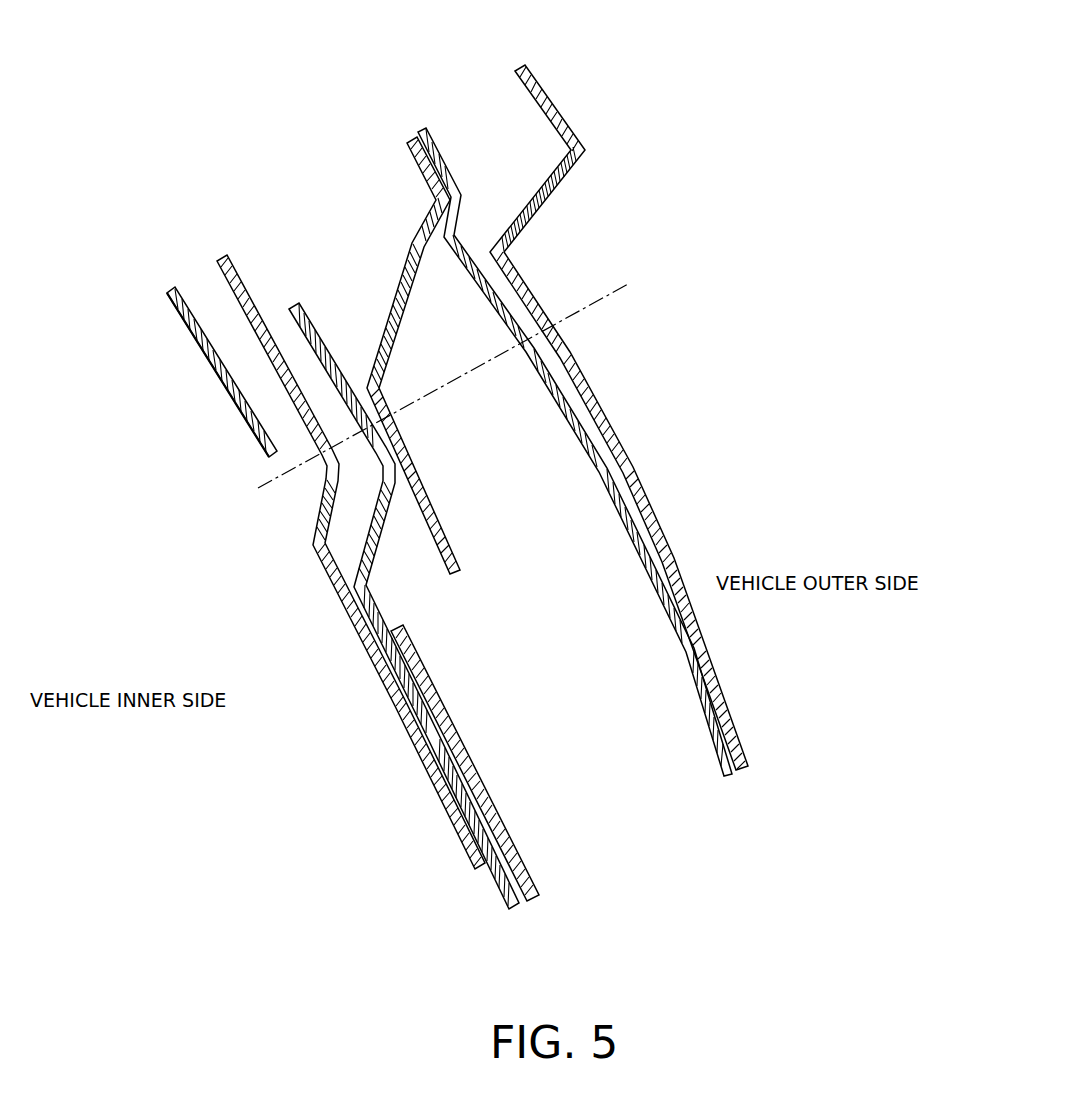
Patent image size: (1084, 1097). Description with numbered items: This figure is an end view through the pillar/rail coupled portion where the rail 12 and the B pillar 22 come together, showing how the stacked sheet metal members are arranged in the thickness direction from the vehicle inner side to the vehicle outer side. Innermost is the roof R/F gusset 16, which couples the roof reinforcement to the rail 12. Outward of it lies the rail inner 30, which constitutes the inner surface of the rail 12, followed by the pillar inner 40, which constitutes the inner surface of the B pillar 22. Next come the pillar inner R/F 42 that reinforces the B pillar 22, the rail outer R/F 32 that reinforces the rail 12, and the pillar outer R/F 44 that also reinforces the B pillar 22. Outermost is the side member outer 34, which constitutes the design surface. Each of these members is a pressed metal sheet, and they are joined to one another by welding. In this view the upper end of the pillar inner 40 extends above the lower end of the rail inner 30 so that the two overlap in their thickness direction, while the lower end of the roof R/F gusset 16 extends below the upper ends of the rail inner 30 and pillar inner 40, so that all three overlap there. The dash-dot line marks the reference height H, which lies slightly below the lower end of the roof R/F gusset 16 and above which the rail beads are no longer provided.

The rail 12 is at (456, 467).
The B pillar 22 is at (464, 518).
The roof R/F gusset 16 is at (207, 356).
The rail inner 30 is at (322, 508).
The rail outer R/F 32 is at (422, 470).
The side member outer 34 is at (560, 112).
The pillar inner 40 is at (362, 551).
The pillar inner R/F 42 is at (397, 700).
The pillar outer R/F 44 is at (463, 243).
The reference height H is at (438, 385).